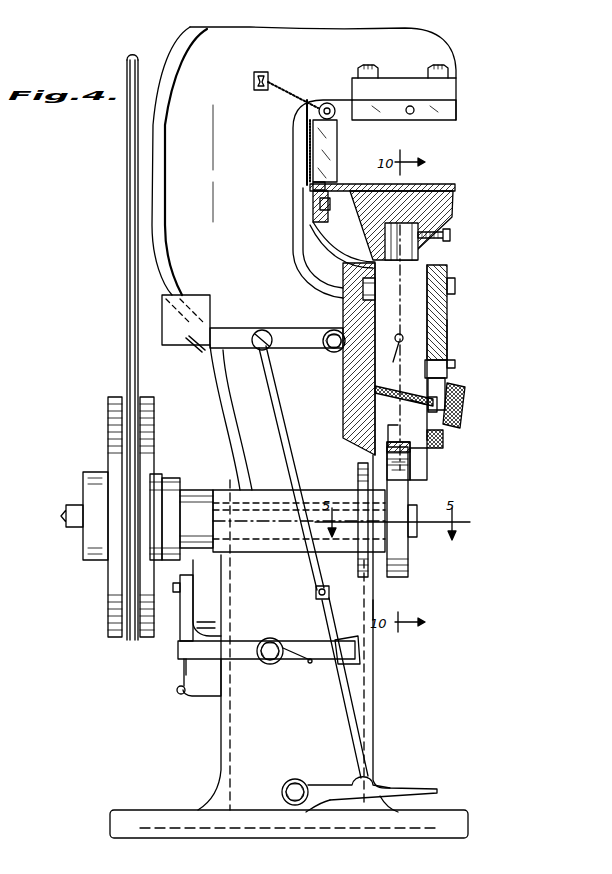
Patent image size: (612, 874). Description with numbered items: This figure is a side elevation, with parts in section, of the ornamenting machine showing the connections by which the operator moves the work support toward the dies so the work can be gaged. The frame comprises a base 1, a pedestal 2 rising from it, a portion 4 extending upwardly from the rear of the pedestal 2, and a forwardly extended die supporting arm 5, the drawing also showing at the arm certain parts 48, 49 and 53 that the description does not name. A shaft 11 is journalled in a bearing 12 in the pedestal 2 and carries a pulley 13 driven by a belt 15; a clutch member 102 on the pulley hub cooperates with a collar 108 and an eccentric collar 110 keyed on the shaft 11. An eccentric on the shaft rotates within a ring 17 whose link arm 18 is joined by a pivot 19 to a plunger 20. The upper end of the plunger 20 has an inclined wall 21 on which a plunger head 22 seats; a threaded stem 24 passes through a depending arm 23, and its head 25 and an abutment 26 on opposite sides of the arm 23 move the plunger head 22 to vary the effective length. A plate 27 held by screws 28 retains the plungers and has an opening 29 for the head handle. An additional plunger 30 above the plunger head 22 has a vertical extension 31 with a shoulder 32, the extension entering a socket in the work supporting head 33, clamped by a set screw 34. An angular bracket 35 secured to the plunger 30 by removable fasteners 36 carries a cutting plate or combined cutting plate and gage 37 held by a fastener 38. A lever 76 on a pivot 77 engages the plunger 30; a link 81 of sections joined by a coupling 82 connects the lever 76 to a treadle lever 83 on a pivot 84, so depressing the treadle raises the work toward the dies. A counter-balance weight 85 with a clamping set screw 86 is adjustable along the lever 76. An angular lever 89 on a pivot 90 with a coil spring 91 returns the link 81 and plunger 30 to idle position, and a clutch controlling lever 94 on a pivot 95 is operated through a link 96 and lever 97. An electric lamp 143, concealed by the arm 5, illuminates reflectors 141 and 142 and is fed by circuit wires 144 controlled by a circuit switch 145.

The base 1 is at (150, 822).
The pedestal 2 is at (374, 690).
The frame portion 4 is at (175, 213).
The die supporting arm 5 is at (432, 52).
The shaft 11 is at (66, 518).
The bearing 12 is at (280, 540).
The pulley 13 is at (112, 590).
The belt 15 is at (128, 293).
The ring 17 is at (402, 556).
The link arm 18 is at (387, 454).
The pivot 19 is at (414, 345).
The plunger 20 is at (425, 470).
The inclined wall 21 is at (372, 415).
The plunger head 22 is at (432, 388).
The depending arm 23 is at (437, 448).
The threaded stem 24 is at (422, 404).
The head 25 is at (462, 404).
The abutment 26 is at (390, 436).
The plate 27 is at (445, 342).
The screws 28 is at (452, 362).
The opening 29 is at (447, 372).
The plunger 30 is at (418, 322).
The vertical extension 31 is at (420, 256).
The shoulder 32 is at (455, 283).
The work supporting head 33 is at (448, 210).
The set screw 34 is at (451, 235).
The angular bracket 35 is at (355, 218).
The removable fasteners 36 is at (363, 290).
The cutting plate or combined cutting plate and gage 37 is at (440, 184).
The fastener 38 is at (313, 184).
The cover block 48 is at (447, 120).
The pads 49 is at (438, 65).
The screw 53 is at (411, 114).
The lever 76 is at (240, 328).
The pivot 77 is at (330, 353).
The link 81 is at (288, 420).
The coupling 82 is at (316, 592).
The treadle lever 83 is at (355, 798).
The pivot 84 is at (292, 806).
The counter-balance weight 85 is at (176, 345).
The clamping set screw 86 is at (200, 352).
The angular lever 89 is at (240, 641).
The pivot 90 is at (270, 660).
The coil spring 91 is at (284, 640).
The clutch controlling lever 94 is at (190, 605).
The pivot 95 is at (175, 592).
The link 96 is at (183, 668).
The lever 97 is at (206, 690).
The clutch member 102 is at (158, 478).
The collar 108 is at (190, 490).
The eccentric collar 110 is at (215, 521).
The reflector 141 is at (307, 140).
The reflector 142 is at (338, 150).
The electric lamp 143 is at (328, 104).
The electric circuit wires 144 is at (296, 88).
The circuit switch 145 is at (261, 72).